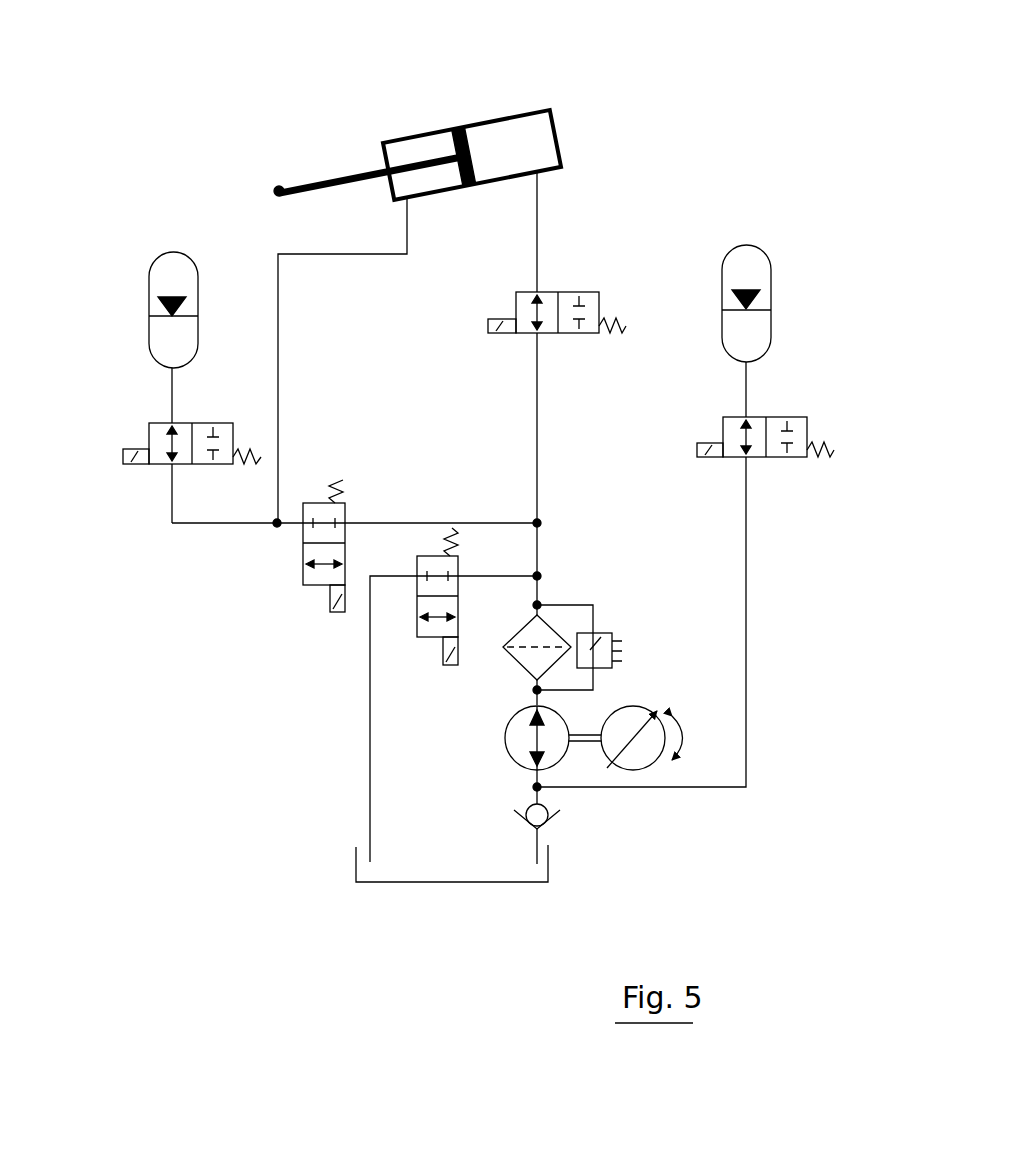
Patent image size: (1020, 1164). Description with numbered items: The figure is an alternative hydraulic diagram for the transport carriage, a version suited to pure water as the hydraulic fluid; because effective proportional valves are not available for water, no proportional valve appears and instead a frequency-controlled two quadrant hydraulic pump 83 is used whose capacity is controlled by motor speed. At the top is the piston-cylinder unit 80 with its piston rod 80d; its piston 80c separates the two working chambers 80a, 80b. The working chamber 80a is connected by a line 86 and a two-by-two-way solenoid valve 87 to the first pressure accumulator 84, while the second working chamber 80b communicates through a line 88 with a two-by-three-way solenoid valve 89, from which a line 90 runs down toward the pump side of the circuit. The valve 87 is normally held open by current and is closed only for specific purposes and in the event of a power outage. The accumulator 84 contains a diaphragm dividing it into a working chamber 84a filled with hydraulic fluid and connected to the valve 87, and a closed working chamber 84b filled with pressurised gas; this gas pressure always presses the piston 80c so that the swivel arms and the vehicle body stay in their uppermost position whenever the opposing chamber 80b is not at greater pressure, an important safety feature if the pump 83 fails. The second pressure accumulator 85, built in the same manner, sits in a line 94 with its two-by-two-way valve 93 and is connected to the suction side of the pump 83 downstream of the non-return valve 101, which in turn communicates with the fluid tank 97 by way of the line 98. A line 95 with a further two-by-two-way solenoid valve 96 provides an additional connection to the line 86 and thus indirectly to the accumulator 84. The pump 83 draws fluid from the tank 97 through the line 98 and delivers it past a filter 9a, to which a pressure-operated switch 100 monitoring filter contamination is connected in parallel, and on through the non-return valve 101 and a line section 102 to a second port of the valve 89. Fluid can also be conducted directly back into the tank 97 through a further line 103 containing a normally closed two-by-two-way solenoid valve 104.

The piston-cylinder unit 80 is at (446, 107).
The working chamber 80a is at (398, 153).
The working chamber 80b is at (505, 135).
The piston 80c is at (464, 156).
The piston rod 80d is at (346, 170).
The hydraulic pump 83 is at (523, 735).
The pressure accumulator 84 is at (128, 296).
The working chamber 84a is at (167, 347).
The working chamber 84b is at (183, 278).
The pressure accumulator 85 is at (746, 272).
The line 86 is at (305, 255).
The 2/2-way solenoid valve 87 is at (160, 432).
The line 88 is at (540, 200).
The 2/3-way solenoid valve 89 is at (585, 297).
The hydraulic line 90 is at (538, 418).
The 2/2-way valve 93 is at (796, 430).
The line 94 is at (746, 637).
The line 95 is at (413, 520).
The 2/2-way solenoid valve 96 is at (323, 573).
The fluid tank 97 is at (407, 882).
The line 98 is at (540, 857).
The filter 9a is at (543, 633).
The pressure-operated switch 100 is at (593, 635).
The non-return valve 101 is at (548, 815).
The line section 102 is at (541, 548).
The line 103 is at (368, 720).
The 2/2-way solenoid valve 104 is at (440, 566).